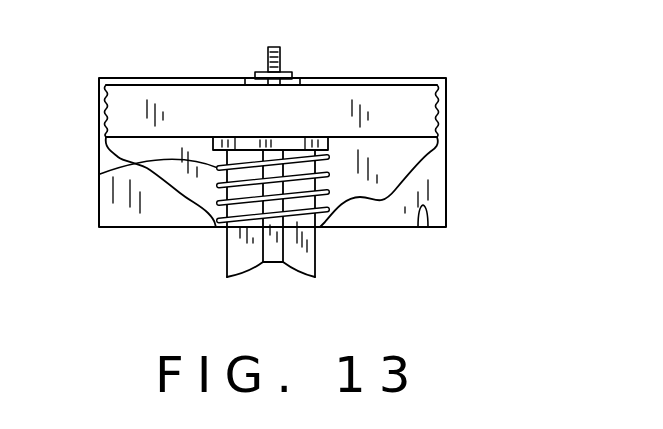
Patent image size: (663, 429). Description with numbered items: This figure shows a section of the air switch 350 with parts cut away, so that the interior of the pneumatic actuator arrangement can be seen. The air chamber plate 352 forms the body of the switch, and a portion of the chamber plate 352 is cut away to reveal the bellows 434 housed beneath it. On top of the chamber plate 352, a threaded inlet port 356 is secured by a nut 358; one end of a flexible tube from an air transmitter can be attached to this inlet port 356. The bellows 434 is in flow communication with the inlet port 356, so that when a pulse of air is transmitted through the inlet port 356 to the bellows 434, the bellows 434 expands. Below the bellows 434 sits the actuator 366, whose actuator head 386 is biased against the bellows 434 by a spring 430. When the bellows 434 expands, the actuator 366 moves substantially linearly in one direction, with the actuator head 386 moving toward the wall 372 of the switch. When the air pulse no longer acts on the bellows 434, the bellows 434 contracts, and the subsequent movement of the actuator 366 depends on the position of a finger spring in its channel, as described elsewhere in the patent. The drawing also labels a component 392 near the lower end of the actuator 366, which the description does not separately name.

The switching apparatus 350 is at (420, 63).
The air chamber plate 352 is at (446, 154).
The threaded inlet port 356 is at (280, 54).
The nut 358 is at (255, 72).
The actuator 366 is at (320, 243).
The wall 372 is at (424, 208).
The actuator head 386 is at (328, 143).
The spring 392 is at (272, 236).
The spring 430 is at (123, 166).
The bellows 434 is at (446, 105).